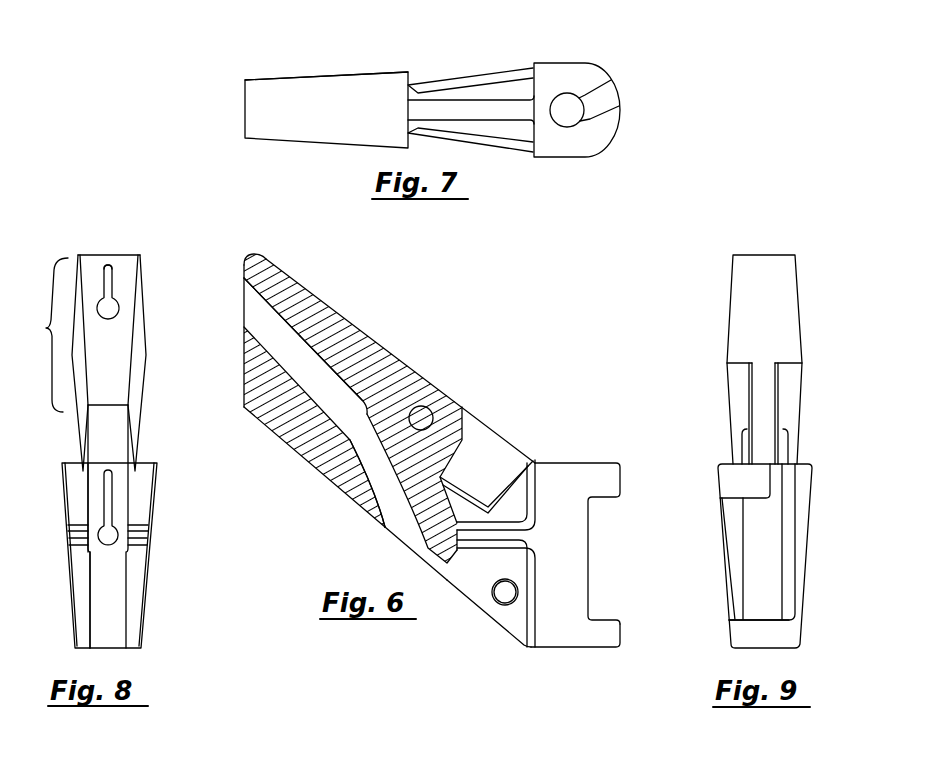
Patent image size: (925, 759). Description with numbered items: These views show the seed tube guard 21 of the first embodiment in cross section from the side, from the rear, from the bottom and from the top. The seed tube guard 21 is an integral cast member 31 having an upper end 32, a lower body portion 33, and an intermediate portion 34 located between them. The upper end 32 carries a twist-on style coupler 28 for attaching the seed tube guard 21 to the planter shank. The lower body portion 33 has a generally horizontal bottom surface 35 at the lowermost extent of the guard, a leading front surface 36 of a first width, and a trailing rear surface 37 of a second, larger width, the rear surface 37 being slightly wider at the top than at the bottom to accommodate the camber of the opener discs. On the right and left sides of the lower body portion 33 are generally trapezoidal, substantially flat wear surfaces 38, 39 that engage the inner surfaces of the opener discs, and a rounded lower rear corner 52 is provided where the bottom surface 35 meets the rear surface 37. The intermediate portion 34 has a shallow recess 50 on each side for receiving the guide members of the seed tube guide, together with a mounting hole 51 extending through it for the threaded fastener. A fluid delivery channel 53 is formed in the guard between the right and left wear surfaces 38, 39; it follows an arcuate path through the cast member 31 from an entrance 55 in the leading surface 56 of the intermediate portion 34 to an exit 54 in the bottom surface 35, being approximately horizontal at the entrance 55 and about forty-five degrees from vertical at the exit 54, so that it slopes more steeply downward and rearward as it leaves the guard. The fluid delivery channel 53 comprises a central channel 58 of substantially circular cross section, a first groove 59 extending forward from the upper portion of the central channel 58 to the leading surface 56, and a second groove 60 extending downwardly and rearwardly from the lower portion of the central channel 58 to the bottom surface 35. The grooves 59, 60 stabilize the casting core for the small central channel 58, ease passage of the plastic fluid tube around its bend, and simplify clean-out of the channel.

In FIG. 7, the seed tube guard 21 is at (475, 92).
In FIG. 8, the seed tube guard 21 is at (116, 406).
In FIG. 6, the seed tube guard 21 is at (409, 454).
In FIG. 9, the seed tube guard 21 is at (715, 441).
In FIG. 7, the twist-on style coupler 28 is at (605, 131).
In FIG. 8, the twist-on style coupler 28 is at (137, 612).
In FIG. 6, the twist-on style coupler 28 is at (602, 637).
In FIG. 9, the twist-on style coupler 28 is at (740, 487).
In FIG. 6, the integral cast member 31 is at (340, 315).
In FIG. 7, the upper end 32 is at (577, 75).
In FIG. 6, the upper end 32 is at (585, 473).
In FIG. 9, the upper end 32 is at (740, 635).
In FIG. 7, the lower body portion 33 is at (273, 135).
In FIG. 8, the lower body portion 33 is at (80, 333).
In FIG. 6, the lower body portion 33 is at (318, 303).
In FIG. 9, the lower body portion 33 is at (772, 270).
In FIG. 7, the intermediate portion 34 is at (485, 103).
In FIG. 6, the intermediate portion 34 is at (488, 437).
In FIG. 9, the intermediate portion 34 is at (762, 422).
In FIG. 8, the bottom surface 35 is at (118, 348).
In FIG. 6, the bottom surface 35 is at (243, 377).
In FIG. 8, the leading front surface 36 is at (113, 587).
In FIG. 6, the leading front surface 36 is at (290, 440).
In FIG. 7, the trailing rear surface 37 is at (292, 95).
In FIG. 6, the trailing rear surface 37 is at (375, 332).
In FIG. 9, the trailing rear surface 37 is at (740, 305).
In FIG. 8, the right wear surface 38 is at (138, 364).
In FIG. 8, the left wear surface 39 is at (80, 395).
In FIG. 6, the shallow recess 50 is at (503, 457).
In FIG. 6, the mounting hole 51 is at (437, 417).
In FIG. 6, the rounded lower rear corner 52 is at (248, 255).
In FIG. 6, the fluid delivery channel 53 is at (345, 438).
In FIG. 8, the exit 54 is at (108, 307).
In FIG. 6, the exit 54 is at (245, 313).
In FIG. 8, the entrance 55 is at (115, 535).
In FIG. 6, the entrance 55 is at (402, 528).
In FIG. 8, the leading surface 56 is at (117, 455).
In FIG. 6, the leading surface 56 is at (428, 548).
In FIG. 6, the central channel 58 is at (422, 416).
In FIG. 8, the first groove 59 is at (110, 497).
In FIG. 6, the first groove 59 is at (358, 477).
In FIG. 8, the second groove 60 is at (108, 275).
In FIG. 6, the second groove 60 is at (250, 288).